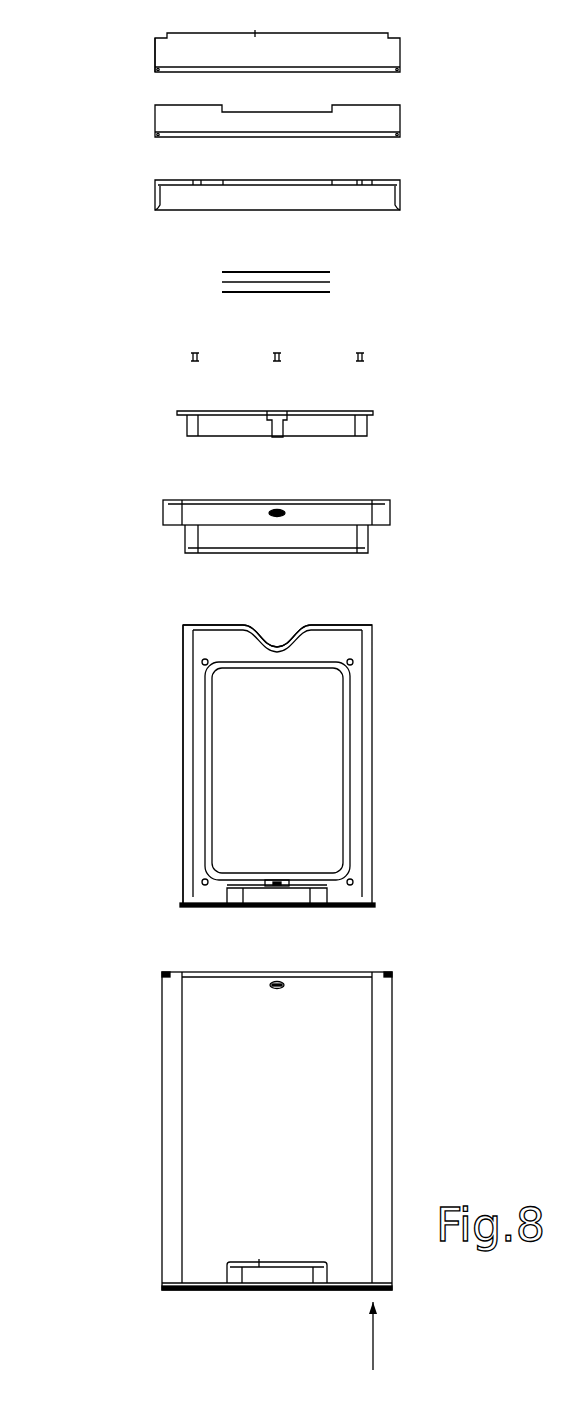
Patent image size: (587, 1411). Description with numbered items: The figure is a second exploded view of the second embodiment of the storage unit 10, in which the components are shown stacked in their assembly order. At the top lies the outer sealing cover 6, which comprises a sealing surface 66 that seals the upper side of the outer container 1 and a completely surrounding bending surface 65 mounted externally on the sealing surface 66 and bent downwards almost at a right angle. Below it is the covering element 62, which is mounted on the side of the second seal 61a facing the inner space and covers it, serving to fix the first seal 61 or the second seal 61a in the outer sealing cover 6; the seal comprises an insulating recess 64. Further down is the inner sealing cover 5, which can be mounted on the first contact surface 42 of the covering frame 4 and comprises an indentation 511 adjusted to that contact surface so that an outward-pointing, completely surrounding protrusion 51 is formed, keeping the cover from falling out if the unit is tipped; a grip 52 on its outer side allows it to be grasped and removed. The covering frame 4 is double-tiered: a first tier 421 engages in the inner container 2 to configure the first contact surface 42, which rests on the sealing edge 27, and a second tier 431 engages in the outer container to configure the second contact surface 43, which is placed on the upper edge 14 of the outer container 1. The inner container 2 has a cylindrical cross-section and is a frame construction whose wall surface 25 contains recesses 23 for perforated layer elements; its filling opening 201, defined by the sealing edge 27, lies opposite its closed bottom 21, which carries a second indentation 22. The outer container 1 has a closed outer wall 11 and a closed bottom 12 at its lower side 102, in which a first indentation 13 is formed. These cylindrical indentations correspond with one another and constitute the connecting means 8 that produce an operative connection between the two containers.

The outer container 1 is at (424, 1062).
The inner container 2 is at (395, 710).
The covering frame 4 is at (162, 492).
The inner sealing cover 5 is at (355, 395).
The outer sealing cover 6 is at (425, 55).
The connecting means 8 is at (335, 893).
The storage unit 10 is at (105, 315).
The outer wall 11 is at (265, 1081).
The bottom 12 is at (374, 1293).
The first indentation 13 is at (259, 1264).
The upper edge 14 is at (165, 973).
The closed bottom 21 is at (355, 905).
The second indentation 22 is at (255, 883).
The recess 23 is at (305, 793).
The wall surface 25 is at (197, 738).
The sealing edge 27 is at (372, 630).
The first contact surface 42 is at (372, 530).
The second contact surface 43 is at (390, 503).
The protrusion 51 is at (375, 413).
The grip 52 is at (280, 427).
The first seal 61 is at (397, 198).
The second seal 61a is at (374, 183).
The covering element 62 is at (413, 118).
The insulating recess 64 is at (237, 185).
The bending surface 65 is at (156, 52).
The sealing surface 66 is at (258, 33).
The lower side 102 is at (346, 1336).
The filling opening 201 is at (275, 618).
The first tier 421 is at (368, 548).
The second tier 431 is at (390, 513).
The indentation 511 is at (368, 427).